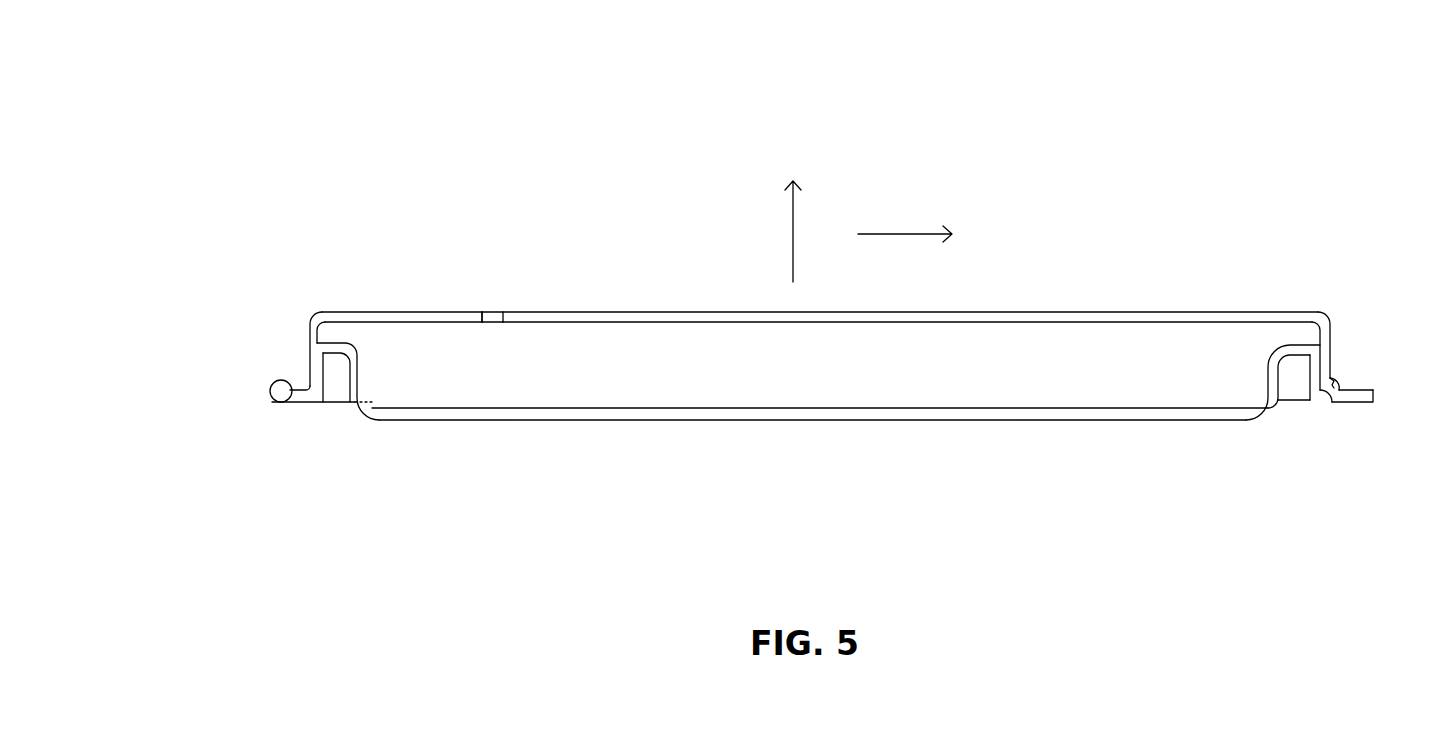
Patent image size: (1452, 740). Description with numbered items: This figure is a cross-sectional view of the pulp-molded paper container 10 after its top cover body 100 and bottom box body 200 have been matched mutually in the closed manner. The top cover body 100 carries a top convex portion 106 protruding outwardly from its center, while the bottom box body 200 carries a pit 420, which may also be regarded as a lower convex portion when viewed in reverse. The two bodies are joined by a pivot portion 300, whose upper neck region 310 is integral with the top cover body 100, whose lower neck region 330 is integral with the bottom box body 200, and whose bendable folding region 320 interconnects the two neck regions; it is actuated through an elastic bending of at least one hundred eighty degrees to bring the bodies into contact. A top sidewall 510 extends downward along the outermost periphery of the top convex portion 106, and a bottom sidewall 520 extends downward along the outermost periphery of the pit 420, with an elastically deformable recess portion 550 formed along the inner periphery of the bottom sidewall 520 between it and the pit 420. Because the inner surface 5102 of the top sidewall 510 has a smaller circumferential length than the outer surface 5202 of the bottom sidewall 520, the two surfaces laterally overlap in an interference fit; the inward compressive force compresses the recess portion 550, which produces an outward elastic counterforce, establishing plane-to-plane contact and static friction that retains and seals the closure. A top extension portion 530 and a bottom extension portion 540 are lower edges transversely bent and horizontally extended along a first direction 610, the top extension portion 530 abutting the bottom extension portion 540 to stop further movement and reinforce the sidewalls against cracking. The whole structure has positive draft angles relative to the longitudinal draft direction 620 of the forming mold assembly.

The pulp-molded paper container 10 is at (162, 70).
The top cover body 100 is at (1060, 312).
The top convex portion 106 is at (600, 312).
The bottom box body 200 is at (958, 422).
The pivot portion 300 is at (295, 382).
The upper neck region 310 is at (472, 283).
The bendable folding region 320 is at (514, 268).
The lower neck region 330 is at (514, 293).
The pit 420 is at (1062, 422).
The top sidewall 510 is at (283, 391).
The inner surface of the top sidewall 5102 is at (1328, 314).
The bottom sidewall 520 is at (323, 373).
The outer surface of the bottom sidewall 5202 is at (1312, 393).
The top extension portion 530 is at (293, 388).
The bottom extension portion 540 is at (308, 404).
The recess portion 550 is at (342, 373).
The first direction 610 is at (958, 234).
The longitudinal draft direction 620 is at (791, 207).